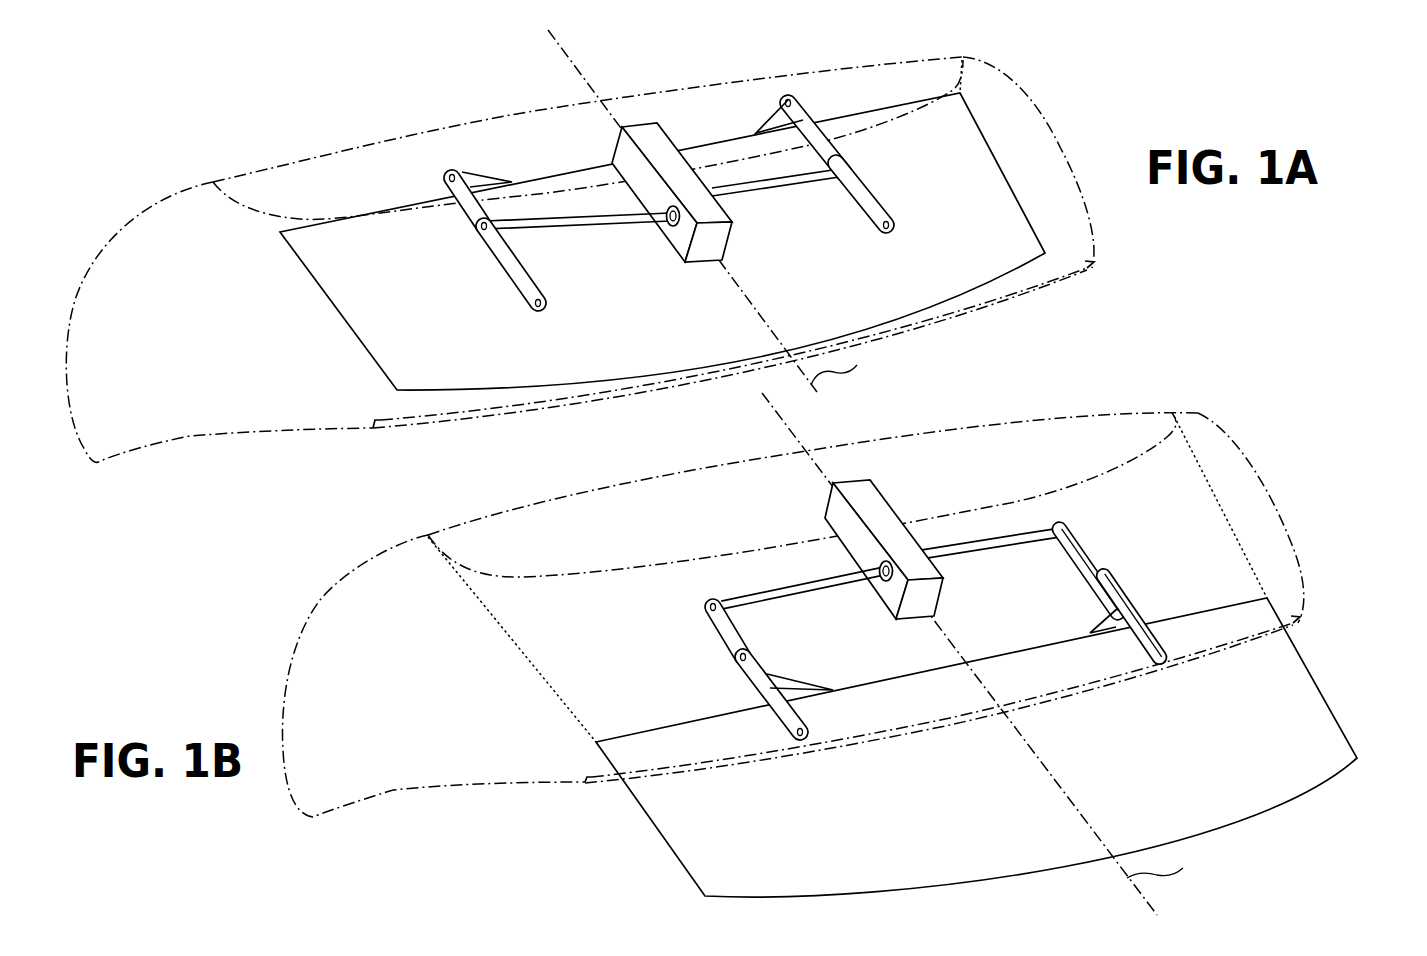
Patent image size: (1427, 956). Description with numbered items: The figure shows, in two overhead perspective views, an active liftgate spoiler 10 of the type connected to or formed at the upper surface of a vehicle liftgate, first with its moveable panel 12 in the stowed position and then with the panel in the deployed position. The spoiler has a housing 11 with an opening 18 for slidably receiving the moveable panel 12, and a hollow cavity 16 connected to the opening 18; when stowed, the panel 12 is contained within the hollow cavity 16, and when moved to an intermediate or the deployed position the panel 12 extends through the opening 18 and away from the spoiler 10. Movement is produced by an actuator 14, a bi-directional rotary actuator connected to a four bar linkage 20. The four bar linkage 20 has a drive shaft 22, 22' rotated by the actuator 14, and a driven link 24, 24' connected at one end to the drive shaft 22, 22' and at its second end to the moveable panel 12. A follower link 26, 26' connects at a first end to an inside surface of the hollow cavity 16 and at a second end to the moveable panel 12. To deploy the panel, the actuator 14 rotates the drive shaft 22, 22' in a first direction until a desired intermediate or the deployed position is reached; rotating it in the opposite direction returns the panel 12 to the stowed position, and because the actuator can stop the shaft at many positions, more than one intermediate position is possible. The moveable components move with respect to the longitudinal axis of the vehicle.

In FIG. 1A, the active liftgate spoiler 10 is at (132, 116).
In FIG. 1B, the active liftgate spoiler 10 is at (500, 878).
In FIG. 1A, the housing 11 is at (1024, 88).
In FIG. 1B, the housing 11 is at (1268, 480).
In FIG. 1A, the moveable panel 12 is at (983, 205).
In FIG. 1B, the moveable panel 12 is at (1270, 702).
In FIG. 1A, the actuator 14 is at (653, 130).
In FIG. 1B, the actuator 14 is at (884, 549).
In FIG. 1B, the hollow cavity 16 is at (1196, 416).
In FIG. 1A, the opening 18 is at (397, 428).
In FIG. 1B, the opening 18 is at (609, 782).
In FIG. 1A, the four bar linkage 20 is at (453, 231).
In FIG. 1A, the drive shaft 22 is at (583, 181).
In FIG. 1B, the drive shaft 22 is at (806, 557).
In FIG. 1A, the drive shaft 22' is at (777, 147).
In FIG. 1B, the drive shaft 22' is at (985, 511).
In FIG. 1A, the driven link 24 is at (410, 177).
In FIG. 1B, the driven link 24 is at (692, 632).
In FIG. 1A, the driven link 24' is at (817, 100).
In FIG. 1B, the driven link 24' is at (1095, 550).
In FIG. 1A, the follower link 26 is at (501, 272).
In FIG. 1B, the follower link 26 is at (754, 694).
In FIG. 1A, the follower link 26' is at (861, 218).
In FIG. 1B, the follower link 26' is at (1152, 612).